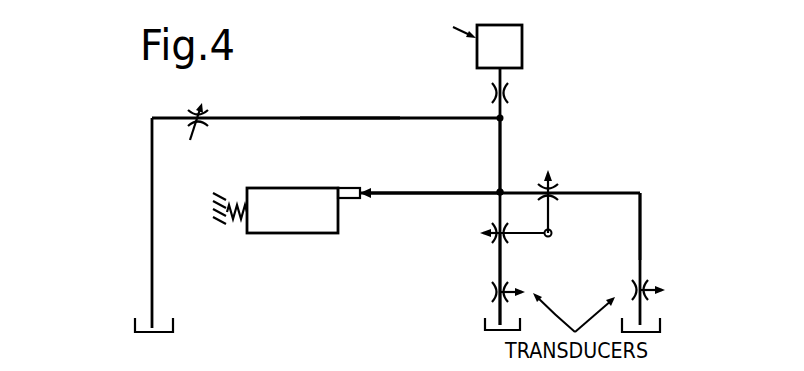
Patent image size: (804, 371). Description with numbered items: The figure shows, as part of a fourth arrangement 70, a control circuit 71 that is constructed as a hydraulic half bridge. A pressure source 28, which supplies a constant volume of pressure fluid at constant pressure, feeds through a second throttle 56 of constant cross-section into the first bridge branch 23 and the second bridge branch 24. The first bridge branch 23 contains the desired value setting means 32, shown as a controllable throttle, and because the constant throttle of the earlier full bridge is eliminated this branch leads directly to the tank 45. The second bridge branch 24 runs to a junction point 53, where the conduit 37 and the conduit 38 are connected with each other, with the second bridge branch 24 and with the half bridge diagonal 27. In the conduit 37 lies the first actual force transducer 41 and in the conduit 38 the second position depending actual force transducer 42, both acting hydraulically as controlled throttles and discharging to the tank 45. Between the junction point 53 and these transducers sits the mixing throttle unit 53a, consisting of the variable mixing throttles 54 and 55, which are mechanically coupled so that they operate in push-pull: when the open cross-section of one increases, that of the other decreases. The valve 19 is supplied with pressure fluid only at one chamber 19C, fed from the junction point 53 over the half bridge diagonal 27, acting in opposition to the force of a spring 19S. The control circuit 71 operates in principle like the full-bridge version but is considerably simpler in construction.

The valve 19 is at (302, 208).
The chamber 19C is at (345, 188).
The spring 19S is at (237, 210).
The first bridge branch 23 is at (342, 118).
The second bridge branch 24 is at (503, 145).
The half bridge diagonal 27 is at (378, 192).
The pressure source 28 is at (511, 49).
The desired value setting means 32 is at (228, 97).
The conduit 37 is at (497, 266).
The conduit 38 is at (642, 228).
The first actual force transducer 41 is at (512, 284).
The second position depending actual force transducer 42 is at (650, 285).
The tank 45 is at (174, 328).
The junction point 53 is at (498, 191).
The mixing throttle unit 53a is at (553, 218).
The mixing throttle 54 is at (488, 228).
The mixing throttle 55 is at (555, 190).
The second throttle of constant cross-section 56 is at (509, 93).
The fourth arrangement 70 is at (587, 127).
The control circuit 71 is at (230, 157).